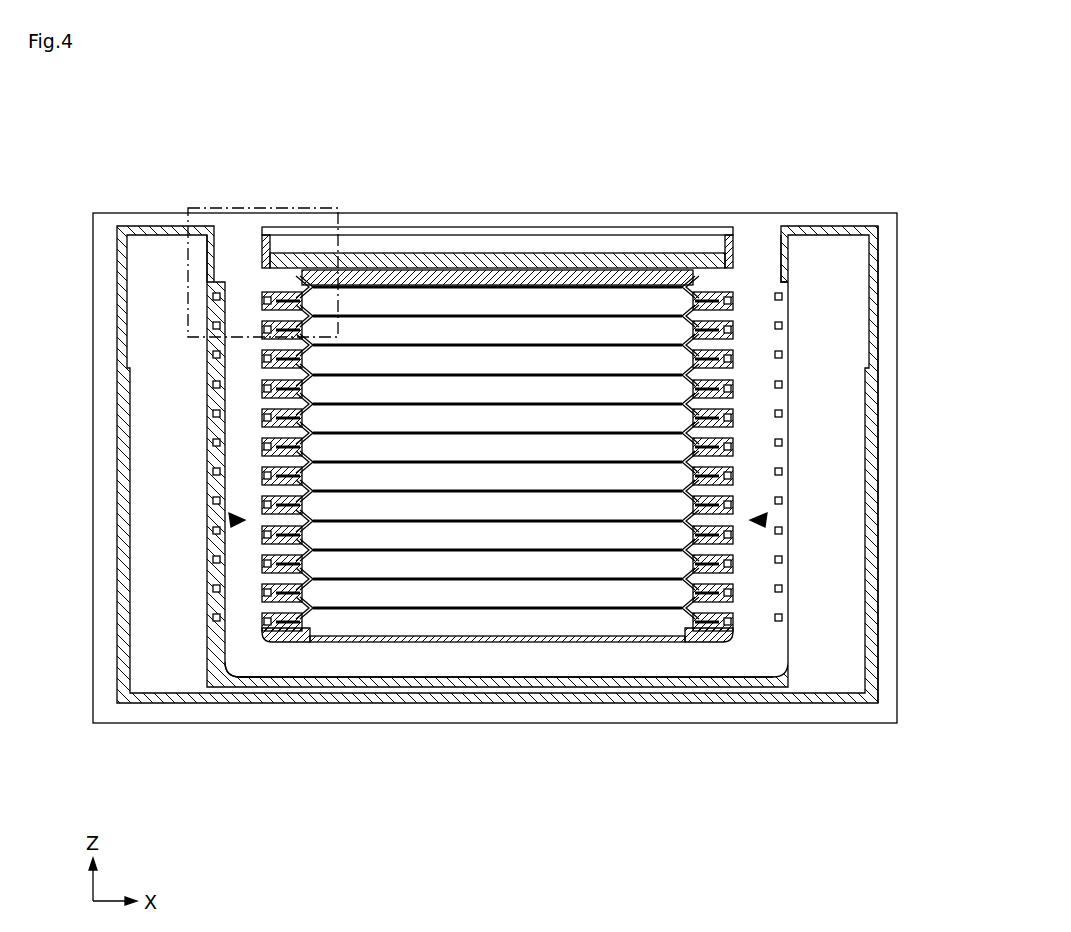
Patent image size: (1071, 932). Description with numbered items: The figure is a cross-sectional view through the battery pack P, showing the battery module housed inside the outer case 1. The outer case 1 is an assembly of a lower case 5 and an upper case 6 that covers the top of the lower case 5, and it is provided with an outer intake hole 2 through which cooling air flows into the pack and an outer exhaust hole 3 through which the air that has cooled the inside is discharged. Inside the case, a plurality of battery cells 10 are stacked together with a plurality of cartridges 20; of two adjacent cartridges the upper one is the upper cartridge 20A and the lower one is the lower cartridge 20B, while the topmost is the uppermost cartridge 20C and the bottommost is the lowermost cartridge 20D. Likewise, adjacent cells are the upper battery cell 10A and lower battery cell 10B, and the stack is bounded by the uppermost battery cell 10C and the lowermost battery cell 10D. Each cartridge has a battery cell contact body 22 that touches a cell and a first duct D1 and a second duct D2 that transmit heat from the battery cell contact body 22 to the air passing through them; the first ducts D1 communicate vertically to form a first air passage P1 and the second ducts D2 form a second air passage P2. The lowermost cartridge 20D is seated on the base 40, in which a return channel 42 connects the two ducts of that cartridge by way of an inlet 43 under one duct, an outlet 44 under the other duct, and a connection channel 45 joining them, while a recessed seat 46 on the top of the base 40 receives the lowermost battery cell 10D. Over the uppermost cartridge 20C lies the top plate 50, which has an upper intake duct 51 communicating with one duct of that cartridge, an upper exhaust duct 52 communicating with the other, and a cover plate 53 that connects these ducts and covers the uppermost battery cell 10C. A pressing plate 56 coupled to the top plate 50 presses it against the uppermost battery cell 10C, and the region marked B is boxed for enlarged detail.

The outer case 1 is at (537, 464).
The outer intake hole 2 is at (500, 450).
The outer exhaust hole 3 is at (760, 243).
The lower case 5 is at (870, 402).
The upper case 6 is at (873, 358).
The battery cells 10 is at (497, 450).
The upper battery cell 10A is at (466, 385).
The lower battery cell 10B is at (518, 420).
The uppermost battery cell 10C is at (424, 300).
The lowermost battery cell 10D is at (470, 622).
The cartridges 20 is at (140, 562).
The upper cartridge 20A is at (212, 397).
The lower cartridge 20B is at (212, 426).
The uppermost cartridge 20C is at (230, 304).
The lowermost cartridge 20D is at (212, 600).
The battery cell contact body 22 is at (297, 283).
The base 40 is at (220, 678).
The return channel 42 is at (506, 714).
The inlet 43 is at (247, 640).
The outlet 44 is at (755, 630).
The connection channel 45 is at (420, 680).
The recessed seat 46 is at (590, 646).
The top plate 50 is at (207, 262).
The upper intake duct 51 is at (255, 258).
The upper exhaust duct 52 is at (745, 243).
The cover plate 53 is at (571, 276).
The pressing plate 56 is at (613, 262).
The detail region B is at (229, 208).
The first duct D1 is at (210, 312).
The second duct D2 is at (747, 315).
The battery pack P is at (882, 158).
The first air passage P1 is at (212, 522).
The second air passage P2 is at (788, 517).